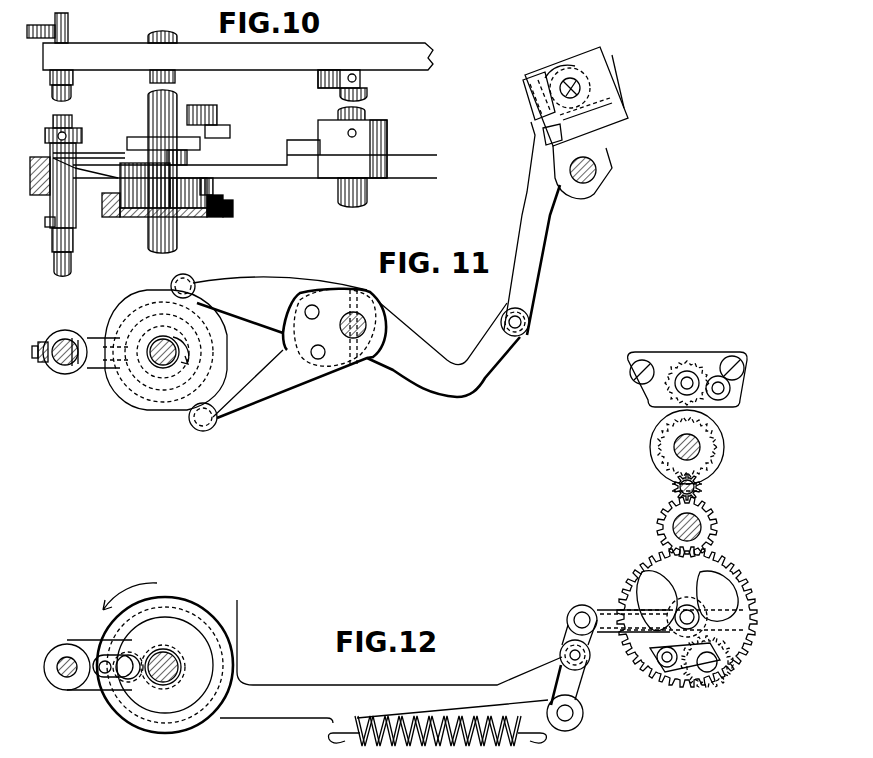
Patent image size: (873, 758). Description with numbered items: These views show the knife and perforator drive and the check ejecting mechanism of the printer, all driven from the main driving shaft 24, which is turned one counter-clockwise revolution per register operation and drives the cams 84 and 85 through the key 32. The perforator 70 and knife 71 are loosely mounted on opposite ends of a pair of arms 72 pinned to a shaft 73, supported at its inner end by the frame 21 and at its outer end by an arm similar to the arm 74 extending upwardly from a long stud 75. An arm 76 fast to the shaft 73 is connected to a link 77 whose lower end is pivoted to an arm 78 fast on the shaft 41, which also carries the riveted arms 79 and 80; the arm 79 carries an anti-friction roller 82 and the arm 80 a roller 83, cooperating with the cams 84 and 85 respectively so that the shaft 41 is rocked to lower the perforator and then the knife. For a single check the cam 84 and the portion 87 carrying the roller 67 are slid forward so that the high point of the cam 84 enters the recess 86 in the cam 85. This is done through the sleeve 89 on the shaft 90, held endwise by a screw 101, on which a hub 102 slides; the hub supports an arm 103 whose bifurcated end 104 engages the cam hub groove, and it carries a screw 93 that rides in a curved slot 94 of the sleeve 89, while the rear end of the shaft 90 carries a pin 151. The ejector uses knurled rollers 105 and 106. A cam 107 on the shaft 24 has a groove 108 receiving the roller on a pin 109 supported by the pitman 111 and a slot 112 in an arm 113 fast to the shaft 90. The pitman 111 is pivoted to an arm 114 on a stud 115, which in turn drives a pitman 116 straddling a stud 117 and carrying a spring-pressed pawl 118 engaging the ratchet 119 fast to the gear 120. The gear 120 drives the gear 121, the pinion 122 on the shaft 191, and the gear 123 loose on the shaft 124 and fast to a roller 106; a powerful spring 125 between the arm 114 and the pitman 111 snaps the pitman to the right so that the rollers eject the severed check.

In FIG. 10, the frame 21 is at (334, 55).
In FIG. 10, the main driving shaft 24 is at (172, 36).
In FIG. 11, the main driving shaft 24 is at (178, 352).
In FIG. 12, the main driving shaft 24 is at (167, 682).
In FIG. 11, the key 32 is at (171, 340).
In FIG. 12, the key 32 is at (160, 657).
In FIG. 10, the shaft 41 is at (367, 195).
In FIG. 11, the shaft 41 is at (377, 327).
In FIG. 10, the roller 67 is at (215, 125).
In FIG. 11, the perforator 70 is at (530, 82).
In FIG. 11, the knife 71 is at (606, 58).
In FIG. 11, the arms 72 is at (580, 84).
In FIG. 11, the shaft 73 is at (583, 88).
In FIG. 11, the arm 74 is at (597, 143).
In FIG. 11, the long stud 75 is at (590, 172).
In FIG. 11, the arm 76 is at (553, 67).
In FIG. 11, the link 77 is at (533, 230).
In FIG. 11, the arm 78 is at (473, 380).
In FIG. 10, the arm 79 is at (388, 157).
In FIG. 11, the arm 79 is at (275, 284).
In FIG. 10, the arm 80 is at (388, 167).
In FIG. 11, the arm 80 is at (303, 385).
In FIG. 10, the anti-friction roller 82 is at (180, 170).
In FIG. 11, the anti-friction roller 82 is at (178, 278).
In FIG. 11, the anti-friction roller 83 is at (203, 431).
In FIG. 10, the cam 84 is at (215, 188).
In FIG. 11, the cam 84 is at (152, 400).
In FIG. 10, the cam 85 is at (215, 218).
In FIG. 11, the cam 85 is at (185, 405).
In FIG. 10, the recess 86 is at (183, 208).
In FIG. 10, the portion 87 is at (225, 135).
In FIG. 10, the sleeve 89 is at (77, 227).
In FIG. 11, the sleeve 89 is at (70, 373).
In FIG. 10, the shaft 90 is at (72, 263).
In FIG. 11, the shaft 90 is at (70, 340).
In FIG. 12, the shaft 90 is at (67, 675).
In FIG. 10, the screw 93 is at (32, 195).
In FIG. 10, the curved slot 94 is at (85, 177).
In FIG. 10, the screw 101 is at (46, 227).
In FIG. 11, the screw 101 is at (53, 333).
In FIG. 10, the hub 102 is at (42, 143).
In FIG. 11, the hub 102 is at (55, 372).
In FIG. 10, the arm 103 is at (95, 153).
In FIG. 10, the bifurcated end 104 is at (157, 155).
In FIG. 12, the knurled rollers 105 is at (685, 367).
In FIG. 12, the knurled rollers 106 is at (718, 447).
In FIG. 12, the cam 107 is at (170, 603).
In FIG. 12, the groove 108 is at (177, 615).
In FIG. 12, the pin 109 is at (130, 655).
In FIG. 12, the pitman 111 is at (310, 677).
In FIG. 12, the slot 112 is at (107, 655).
In FIG. 12, the arm 113 is at (62, 645).
In FIG. 12, the arm 114 is at (580, 683).
In FIG. 12, the stud 115 is at (567, 712).
In FIG. 12, the pitman 116 is at (610, 607).
In FIG. 12, the stud 117 is at (688, 618).
In FIG. 12, the spring-pressed pawl 118 is at (687, 687).
In FIG. 12, the ratchet 119 is at (747, 631).
In FIG. 12, the gear 120 is at (733, 577).
In FIG. 12, the gear 121 is at (707, 523).
In FIG. 12, the pinion 122 is at (700, 488).
In FIG. 12, the gear 123 is at (708, 458).
In FIG. 12, the shaft 124 is at (698, 440).
In FIG. 12, the spring 125 is at (463, 740).
In FIG. 10, the pin 151 is at (66, 30).
In FIG. 12, the pin 151 is at (56, 751).
In FIG. 12, the shaft 191 is at (675, 488).